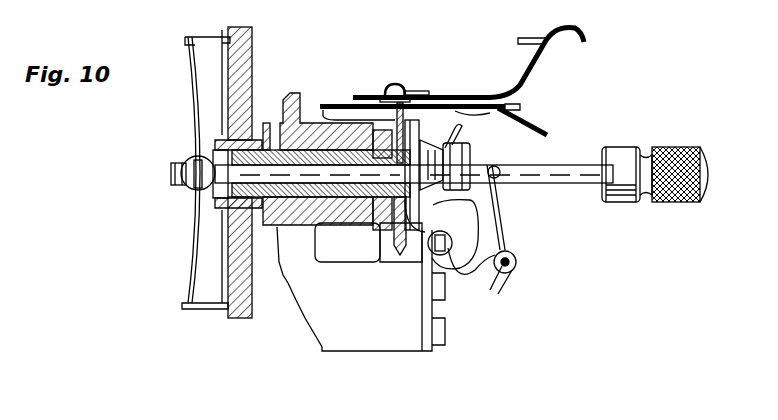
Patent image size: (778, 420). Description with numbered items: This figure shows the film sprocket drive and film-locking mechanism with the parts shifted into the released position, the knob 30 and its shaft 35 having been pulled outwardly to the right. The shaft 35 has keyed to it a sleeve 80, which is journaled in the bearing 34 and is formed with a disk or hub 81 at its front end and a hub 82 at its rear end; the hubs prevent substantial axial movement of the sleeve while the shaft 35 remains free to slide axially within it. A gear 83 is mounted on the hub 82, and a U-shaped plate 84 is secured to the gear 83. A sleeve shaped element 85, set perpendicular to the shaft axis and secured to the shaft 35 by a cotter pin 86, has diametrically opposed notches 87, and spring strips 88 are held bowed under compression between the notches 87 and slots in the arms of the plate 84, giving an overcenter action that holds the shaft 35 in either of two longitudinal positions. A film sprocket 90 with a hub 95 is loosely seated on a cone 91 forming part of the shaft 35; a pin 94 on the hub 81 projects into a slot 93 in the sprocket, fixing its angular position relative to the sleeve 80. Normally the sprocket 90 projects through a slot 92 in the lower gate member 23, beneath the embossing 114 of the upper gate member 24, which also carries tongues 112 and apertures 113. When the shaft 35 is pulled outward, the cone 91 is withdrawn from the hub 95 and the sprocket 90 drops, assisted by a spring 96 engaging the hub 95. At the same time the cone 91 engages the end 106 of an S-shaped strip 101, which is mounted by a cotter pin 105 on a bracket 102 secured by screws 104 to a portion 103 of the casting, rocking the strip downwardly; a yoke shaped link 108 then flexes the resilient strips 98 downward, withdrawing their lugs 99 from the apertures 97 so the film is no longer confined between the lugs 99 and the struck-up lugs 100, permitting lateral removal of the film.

The lower gate member 23 is at (545, 128).
The upper gate member 24 is at (540, 72).
The knob 30 is at (674, 149).
The bearing 34 is at (310, 122).
The shaft 35 is at (198, 194).
The sleeve 80 is at (266, 120).
The disk or hub 81 is at (380, 232).
The hub 82 is at (224, 143).
The gear 83 is at (256, 45).
The U-shaped plate 84 is at (205, 310).
The sleeve shaped element 85 is at (190, 160).
The cotter pin 86 is at (185, 177).
The notches 87 is at (198, 152).
The spring strips 88 is at (187, 100).
The film sprocket 90 is at (392, 240).
The cone 91 is at (436, 206).
The slot 92 is at (412, 102).
The slot 93 is at (372, 93).
The pin 94 is at (335, 118).
The hub 95 is at (410, 255).
The spring 96 is at (418, 121).
The apertures 97 is at (510, 111).
The resilient strip 98 is at (455, 128).
The lug 99 is at (470, 143).
The lugs 100 is at (387, 91).
The S-shaped strip 101 is at (513, 283).
The bracket 102 is at (444, 270).
The portion of the casting 103 is at (410, 340).
The screws 104 is at (444, 342).
The cotter pin 105 is at (510, 242).
The end of the S-strip 106 is at (480, 211).
The yoke shaped link 108 is at (503, 238).
The tongues 112 is at (533, 30).
The apertures 113 is at (468, 98).
The embossing 114 is at (422, 97).